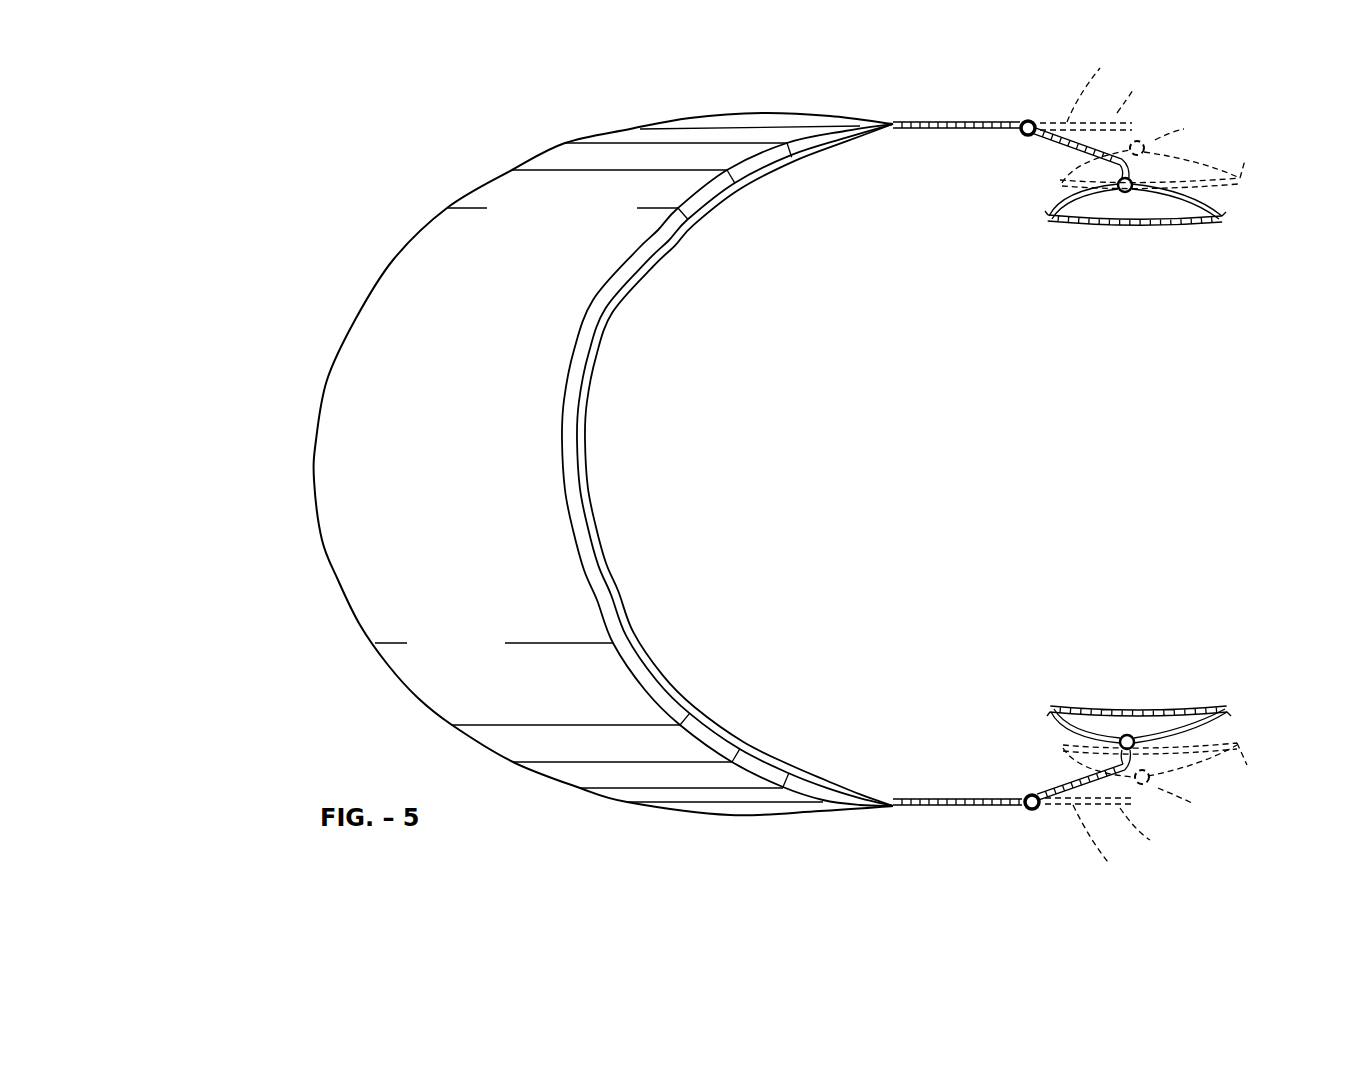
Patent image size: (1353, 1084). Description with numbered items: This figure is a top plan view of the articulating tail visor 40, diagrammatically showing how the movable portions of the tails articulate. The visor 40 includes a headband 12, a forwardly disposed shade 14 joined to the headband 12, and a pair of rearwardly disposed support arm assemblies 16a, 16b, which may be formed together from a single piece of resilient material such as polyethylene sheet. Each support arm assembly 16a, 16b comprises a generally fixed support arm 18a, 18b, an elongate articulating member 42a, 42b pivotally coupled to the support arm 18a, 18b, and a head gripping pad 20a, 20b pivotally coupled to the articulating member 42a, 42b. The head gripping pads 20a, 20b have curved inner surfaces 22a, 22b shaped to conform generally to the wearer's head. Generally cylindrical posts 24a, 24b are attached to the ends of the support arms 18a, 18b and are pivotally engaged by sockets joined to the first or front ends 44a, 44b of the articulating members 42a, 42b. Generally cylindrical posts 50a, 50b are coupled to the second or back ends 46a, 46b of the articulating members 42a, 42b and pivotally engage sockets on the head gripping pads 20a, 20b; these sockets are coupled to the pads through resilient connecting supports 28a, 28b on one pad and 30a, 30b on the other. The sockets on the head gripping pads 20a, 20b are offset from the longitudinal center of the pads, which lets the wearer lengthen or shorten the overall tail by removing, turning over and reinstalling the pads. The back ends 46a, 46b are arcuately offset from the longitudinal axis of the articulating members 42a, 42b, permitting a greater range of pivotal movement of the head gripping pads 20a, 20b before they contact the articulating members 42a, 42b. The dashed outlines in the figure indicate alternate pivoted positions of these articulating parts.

The headband 12 is at (594, 398).
The shade 14 is at (371, 610).
The first support arm assembly 16a is at (1105, 754).
The second support arm assembly 16b is at (1065, 173).
The first support arm 18a is at (988, 798).
The second support arm 18b is at (978, 120).
The first head gripping pad 20a is at (1228, 710).
The second head gripping pad 20b is at (1222, 220).
The curved inner surface 22a is at (1153, 737).
The curved inner surface 22b is at (1148, 193).
The first post 24a is at (1040, 790).
The second post 24b is at (1018, 135).
The connecting support 28a is at (1070, 727).
The connecting support 28b is at (1178, 735).
The connecting support 30a is at (1063, 212).
The connecting support 30b is at (1170, 197).
The visor 40 is at (538, 464).
The first articulating member 42a is at (1108, 862).
The second articulating member 42b is at (1100, 68).
The first end 44a is at (1048, 823).
The first end 44b is at (1029, 113).
The second end 46a is at (1164, 803).
The second end 46b is at (1172, 130).
The post 50a is at (1110, 707).
The post 50b is at (1118, 222).